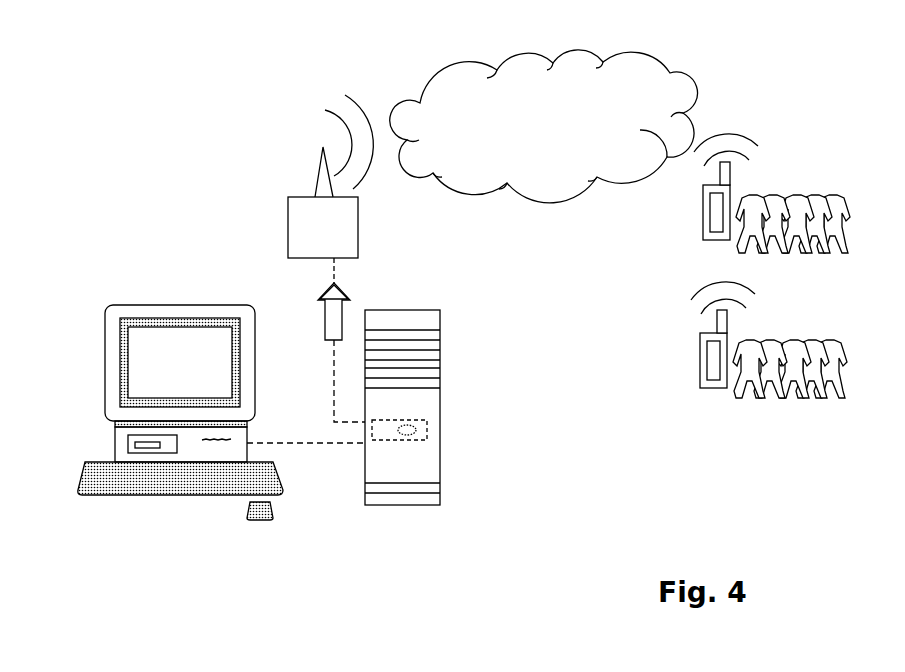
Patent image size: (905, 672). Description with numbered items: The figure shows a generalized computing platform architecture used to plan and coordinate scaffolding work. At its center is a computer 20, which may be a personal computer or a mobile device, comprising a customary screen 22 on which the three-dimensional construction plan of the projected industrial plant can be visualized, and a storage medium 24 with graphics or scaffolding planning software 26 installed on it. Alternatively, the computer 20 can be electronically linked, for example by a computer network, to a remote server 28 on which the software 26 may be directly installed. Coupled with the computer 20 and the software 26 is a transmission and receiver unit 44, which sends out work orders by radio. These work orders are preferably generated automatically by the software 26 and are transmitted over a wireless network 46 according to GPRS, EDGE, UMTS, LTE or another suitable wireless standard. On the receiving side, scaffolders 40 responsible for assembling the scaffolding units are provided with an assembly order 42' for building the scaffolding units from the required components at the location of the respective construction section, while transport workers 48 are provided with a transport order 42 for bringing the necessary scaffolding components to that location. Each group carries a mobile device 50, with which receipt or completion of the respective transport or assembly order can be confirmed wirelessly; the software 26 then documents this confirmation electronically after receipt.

The computer 20 is at (192, 300).
The screen 22 is at (243, 383).
The storage medium 24 is at (170, 450).
The software 26 is at (150, 448).
The remote server 28 is at (412, 418).
The scaffolders 40 is at (811, 176).
The transport order 42 is at (312, 311).
The assembly order 42' is at (366, 282).
The transmission and receiver unit 44 is at (313, 238).
The wireless network 46 is at (543, 130).
The transport workers 48 is at (820, 318).
The mobile device 50 is at (712, 218).